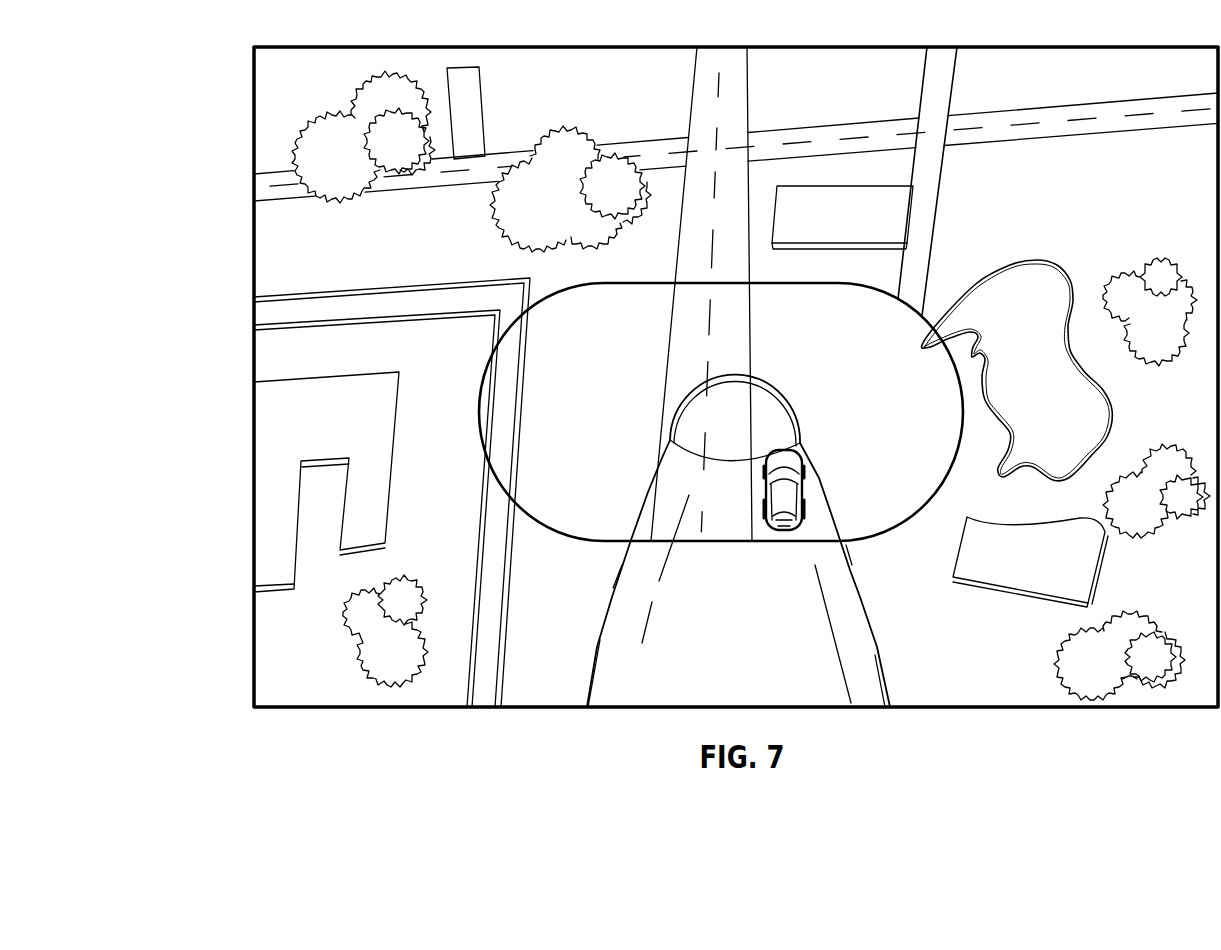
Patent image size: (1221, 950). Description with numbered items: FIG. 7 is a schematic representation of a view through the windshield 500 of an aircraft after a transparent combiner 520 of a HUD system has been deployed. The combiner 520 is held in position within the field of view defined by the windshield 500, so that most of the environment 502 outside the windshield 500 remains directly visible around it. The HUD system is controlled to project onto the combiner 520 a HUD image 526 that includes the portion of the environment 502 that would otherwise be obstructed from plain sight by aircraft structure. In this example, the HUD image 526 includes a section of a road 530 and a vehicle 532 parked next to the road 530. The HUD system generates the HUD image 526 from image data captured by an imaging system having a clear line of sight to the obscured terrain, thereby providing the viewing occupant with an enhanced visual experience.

The windshield 500 is at (1153, 46).
The environment 502 is at (380, 231).
The transparent combiner 520 is at (887, 531).
The HUD image 526 is at (578, 495).
The road 530 is at (734, 420).
The vehicle 532 is at (802, 466).